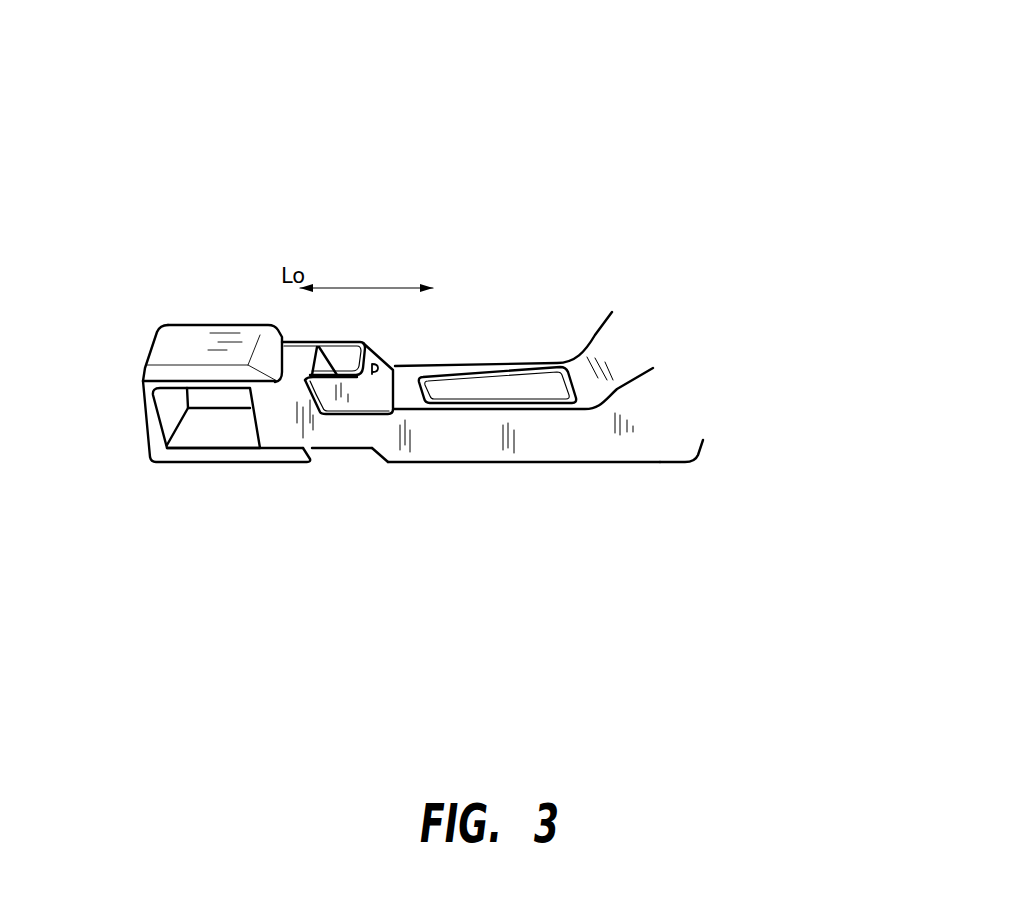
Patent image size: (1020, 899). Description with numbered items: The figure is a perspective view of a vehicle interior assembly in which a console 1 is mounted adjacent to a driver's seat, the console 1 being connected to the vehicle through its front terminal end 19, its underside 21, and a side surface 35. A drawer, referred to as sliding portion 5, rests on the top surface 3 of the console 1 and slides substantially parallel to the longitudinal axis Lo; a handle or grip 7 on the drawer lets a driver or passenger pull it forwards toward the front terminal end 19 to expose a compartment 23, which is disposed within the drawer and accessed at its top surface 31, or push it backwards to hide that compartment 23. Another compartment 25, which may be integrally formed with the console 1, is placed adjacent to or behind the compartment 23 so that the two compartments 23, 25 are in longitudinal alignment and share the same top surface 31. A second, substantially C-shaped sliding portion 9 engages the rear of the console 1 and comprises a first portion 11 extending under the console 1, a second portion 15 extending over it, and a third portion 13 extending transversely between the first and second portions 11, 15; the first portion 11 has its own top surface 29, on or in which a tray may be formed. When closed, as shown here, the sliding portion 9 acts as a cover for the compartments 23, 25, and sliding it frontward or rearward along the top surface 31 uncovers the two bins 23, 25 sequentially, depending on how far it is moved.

The console 1 is at (472, 440).
The top surface 3 is at (495, 393).
The sliding portion (drawer) 5 is at (342, 397).
The handle or grip 7 is at (375, 368).
The sliding portion 9 is at (140, 378).
The first portion 11 is at (243, 452).
The third portion 13 is at (153, 416).
The second portion 15 is at (200, 352).
The front terminal end 19 is at (664, 420).
The underside 21 is at (372, 448).
The compartment (storage bin) 23 is at (345, 362).
The compartment (storage bin) 25 is at (297, 352).
The top surface 29 is at (180, 440).
The top surface 31 is at (345, 360).
The side surface 35 is at (598, 445).